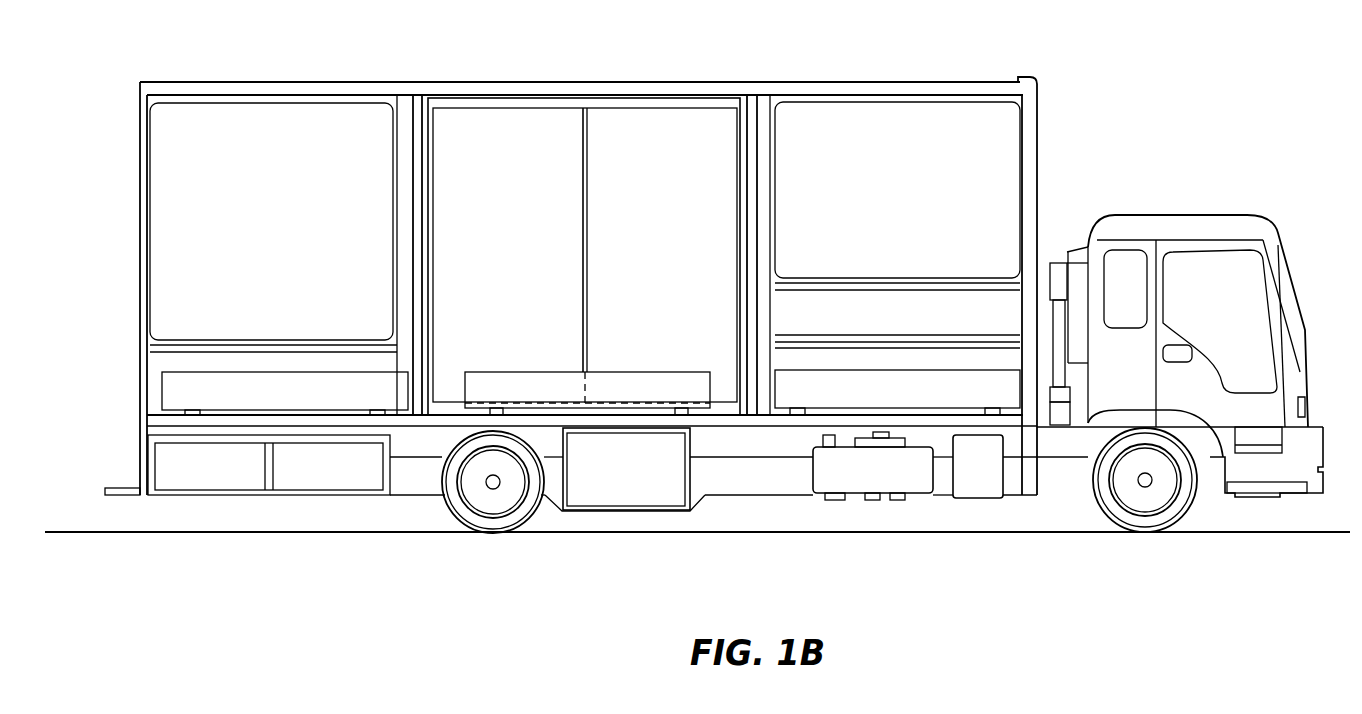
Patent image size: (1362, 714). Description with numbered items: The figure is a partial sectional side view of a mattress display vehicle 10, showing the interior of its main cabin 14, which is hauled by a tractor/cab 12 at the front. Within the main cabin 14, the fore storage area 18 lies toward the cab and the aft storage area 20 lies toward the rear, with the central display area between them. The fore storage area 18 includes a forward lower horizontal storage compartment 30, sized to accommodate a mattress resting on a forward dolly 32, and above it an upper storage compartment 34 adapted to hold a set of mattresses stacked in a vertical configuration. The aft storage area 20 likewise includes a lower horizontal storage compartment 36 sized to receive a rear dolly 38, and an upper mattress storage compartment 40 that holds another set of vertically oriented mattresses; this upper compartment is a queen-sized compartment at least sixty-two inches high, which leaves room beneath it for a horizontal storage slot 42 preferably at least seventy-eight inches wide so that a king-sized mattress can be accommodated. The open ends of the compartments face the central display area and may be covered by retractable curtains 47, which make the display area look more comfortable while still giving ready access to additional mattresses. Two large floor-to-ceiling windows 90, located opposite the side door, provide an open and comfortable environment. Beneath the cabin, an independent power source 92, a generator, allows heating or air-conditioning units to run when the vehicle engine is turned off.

The mattress display vehicle 10 is at (1009, 520).
The tractor/cab 12 is at (1203, 232).
The main cabin 14 is at (698, 120).
The fore storage area 18 is at (998, 118).
The aft storage area 20 is at (345, 122).
The forward lower horizontal storage compartment 30 is at (932, 390).
The forward dolly 32 is at (790, 413).
The upper storage compartment 34 is at (925, 118).
The lower horizontal storage compartment 36 is at (158, 362).
The rear dolly 38 is at (220, 412).
The upper mattress storage compartment 40 is at (158, 138).
The horizontal storage slot 42 is at (970, 303).
The retractable curtain 47 is at (757, 147).
The large window 90 is at (619, 120).
The independent power source 92 is at (623, 487).